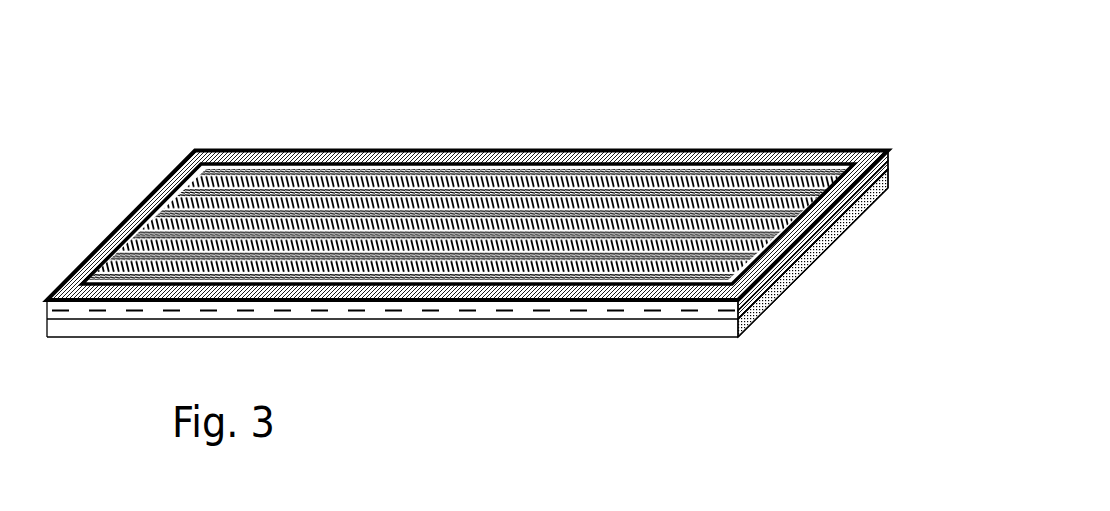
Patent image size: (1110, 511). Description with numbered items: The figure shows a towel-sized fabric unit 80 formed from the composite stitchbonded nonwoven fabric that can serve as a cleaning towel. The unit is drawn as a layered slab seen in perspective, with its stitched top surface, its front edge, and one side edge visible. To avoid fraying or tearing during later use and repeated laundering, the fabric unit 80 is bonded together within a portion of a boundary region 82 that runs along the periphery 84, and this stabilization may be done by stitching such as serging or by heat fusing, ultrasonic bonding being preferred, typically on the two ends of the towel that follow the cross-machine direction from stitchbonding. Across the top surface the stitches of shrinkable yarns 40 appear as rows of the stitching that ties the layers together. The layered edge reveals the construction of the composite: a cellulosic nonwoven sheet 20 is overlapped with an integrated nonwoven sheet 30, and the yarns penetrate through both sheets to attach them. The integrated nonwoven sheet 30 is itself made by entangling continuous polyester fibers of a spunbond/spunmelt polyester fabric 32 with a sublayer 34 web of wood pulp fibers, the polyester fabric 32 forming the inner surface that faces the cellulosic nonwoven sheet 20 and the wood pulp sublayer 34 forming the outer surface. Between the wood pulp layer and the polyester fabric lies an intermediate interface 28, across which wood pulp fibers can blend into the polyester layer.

The towel-sized fabric unit 80 is at (722, 80).
The boundary region 82 is at (175, 178).
The periphery 84 is at (120, 220).
The sublayer web comprising wood pulp fibers 34 is at (116, 300).
The shrinkable yarns 40 is at (807, 150).
The integrated nonwoven sheet 30 is at (745, 303).
The intermediate interface 28 is at (327, 309).
The polyester fabric 32 is at (128, 318).
The cellulosic nonwoven sheet 20 is at (748, 330).